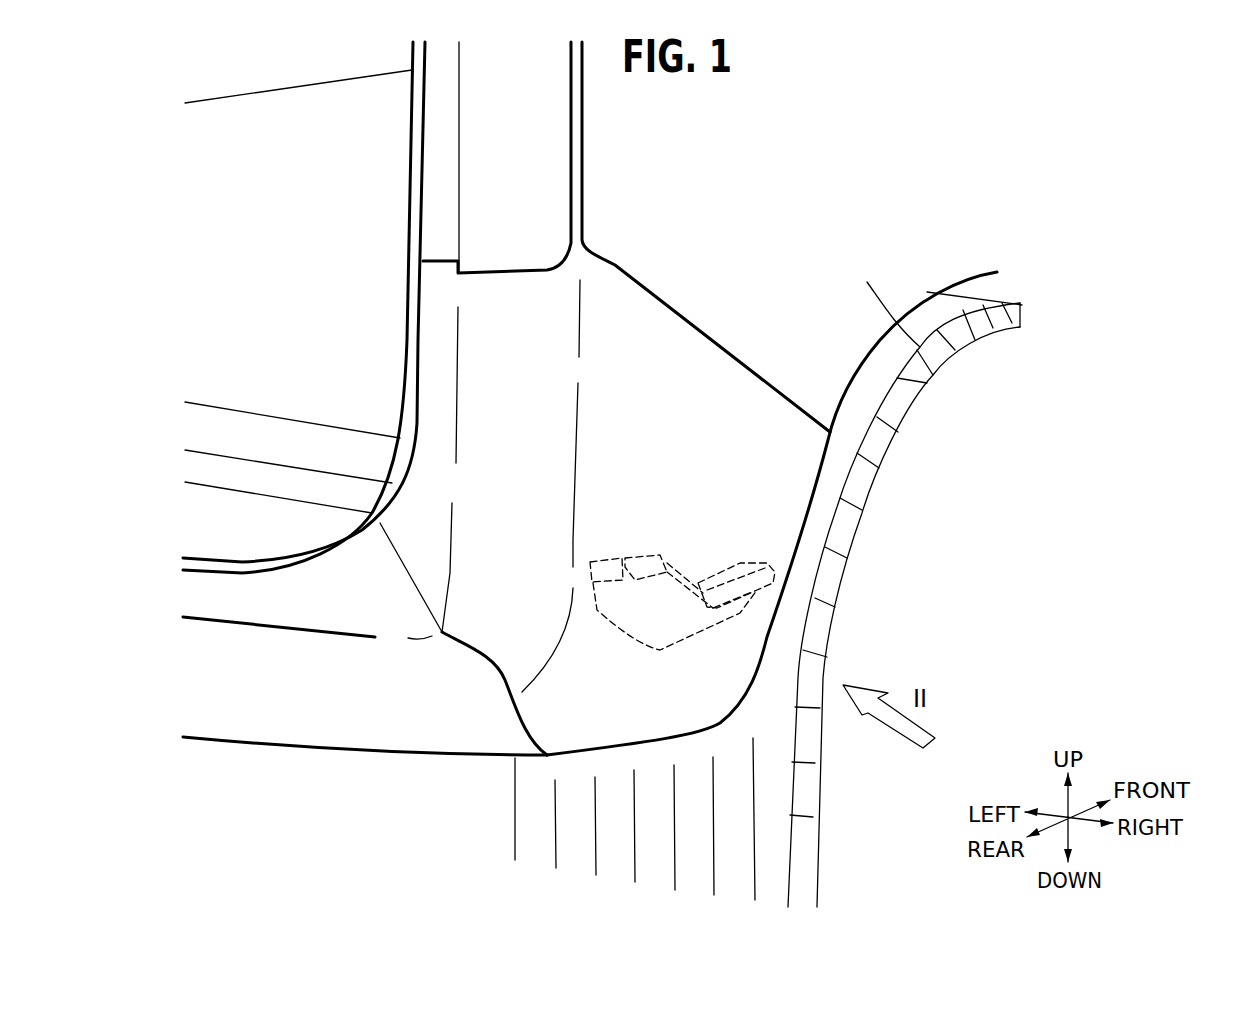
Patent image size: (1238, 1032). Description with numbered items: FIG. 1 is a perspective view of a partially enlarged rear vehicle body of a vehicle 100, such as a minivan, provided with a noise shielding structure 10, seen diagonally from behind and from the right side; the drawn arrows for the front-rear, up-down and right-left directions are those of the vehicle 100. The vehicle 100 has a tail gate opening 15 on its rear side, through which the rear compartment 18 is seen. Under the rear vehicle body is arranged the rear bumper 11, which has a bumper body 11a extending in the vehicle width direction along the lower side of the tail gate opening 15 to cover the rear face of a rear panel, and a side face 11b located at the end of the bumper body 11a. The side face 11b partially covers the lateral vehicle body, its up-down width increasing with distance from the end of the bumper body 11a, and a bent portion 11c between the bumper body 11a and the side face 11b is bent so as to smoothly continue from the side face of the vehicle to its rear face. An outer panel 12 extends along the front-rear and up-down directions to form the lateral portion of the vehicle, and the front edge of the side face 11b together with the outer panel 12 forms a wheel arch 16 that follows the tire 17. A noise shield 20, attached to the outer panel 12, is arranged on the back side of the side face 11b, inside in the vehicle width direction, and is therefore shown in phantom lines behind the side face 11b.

The vehicle 100 is at (490, 155).
The noise shielding structure 10 is at (688, 440).
The rear bumper 11 is at (468, 847).
The bumper body 11a is at (273, 692).
The side face 11b is at (622, 717).
The bent portion 11c is at (508, 527).
The outer panel 12 is at (967, 345).
The tail gate opening 15 is at (413, 227).
The wheel arch 16 is at (828, 455).
The tire 17 is at (887, 360).
The rear compartment 18 is at (303, 271).
The noise shield 20 is at (652, 607).